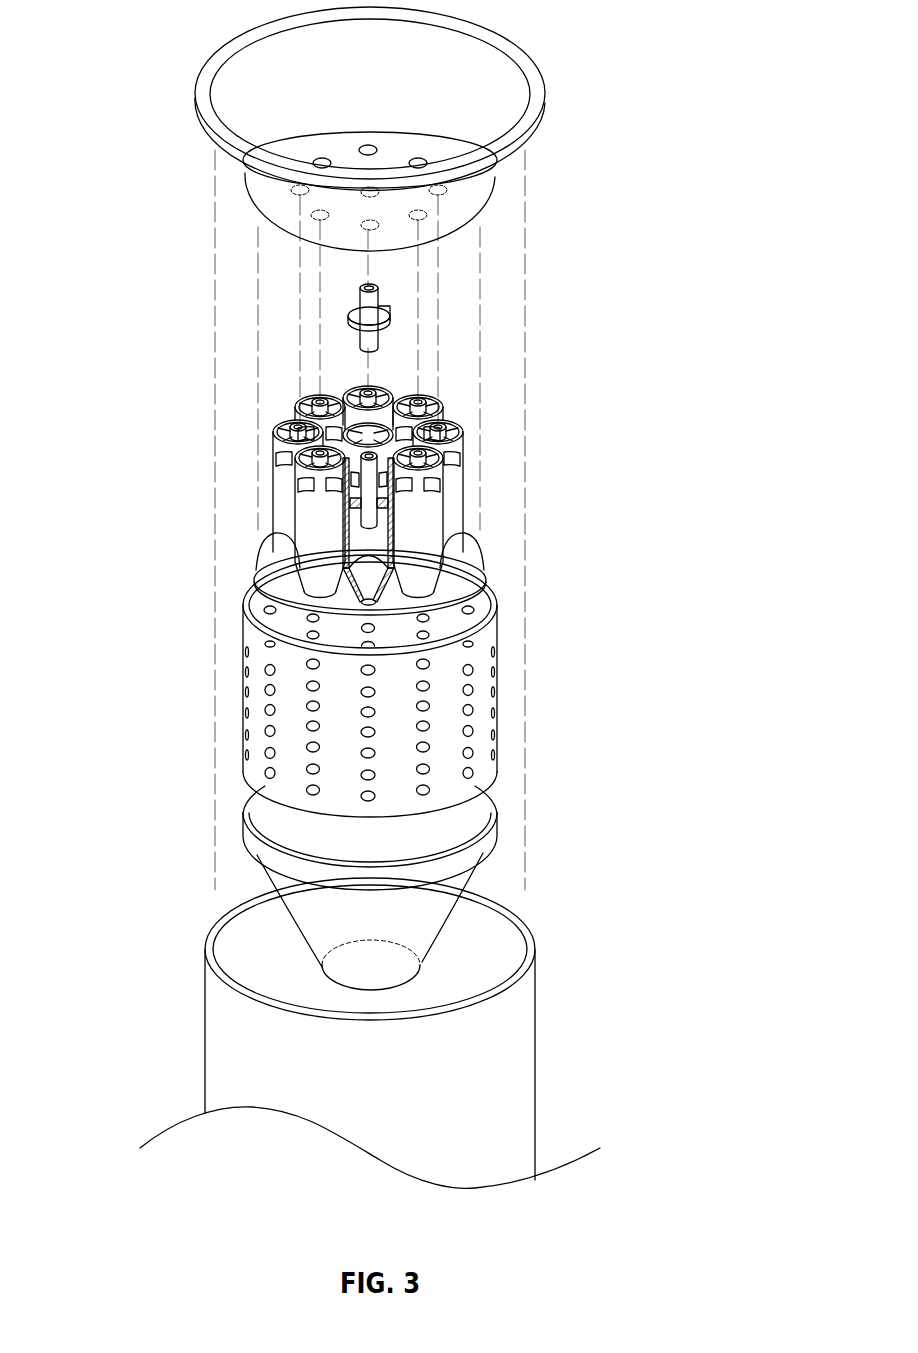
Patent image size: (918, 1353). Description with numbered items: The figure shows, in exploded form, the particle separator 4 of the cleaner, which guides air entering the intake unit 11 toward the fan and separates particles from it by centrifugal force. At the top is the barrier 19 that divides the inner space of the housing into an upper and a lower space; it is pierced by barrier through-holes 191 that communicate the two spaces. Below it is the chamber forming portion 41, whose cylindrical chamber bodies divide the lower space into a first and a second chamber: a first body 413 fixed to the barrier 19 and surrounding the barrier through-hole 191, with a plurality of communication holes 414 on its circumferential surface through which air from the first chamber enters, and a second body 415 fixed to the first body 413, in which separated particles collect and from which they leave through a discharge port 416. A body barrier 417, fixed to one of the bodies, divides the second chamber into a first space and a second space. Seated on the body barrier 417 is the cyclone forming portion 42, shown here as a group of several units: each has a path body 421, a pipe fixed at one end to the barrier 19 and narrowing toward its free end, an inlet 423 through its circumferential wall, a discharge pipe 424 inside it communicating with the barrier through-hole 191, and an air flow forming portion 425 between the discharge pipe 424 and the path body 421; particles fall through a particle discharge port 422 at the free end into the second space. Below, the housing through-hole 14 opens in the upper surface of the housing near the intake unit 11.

The particle separator 4 is at (532, 667).
The intake unit 11 is at (495, 1058).
The housing through-hole 14 is at (475, 928).
The barrier 19 is at (208, 90).
The barrier through-hole 191 is at (362, 150).
The chamber forming portion 41 is at (108, 608).
The first body 413 is at (256, 652).
The communication holes 414 is at (266, 689).
The second body 415 is at (256, 842).
The discharge port 416 is at (342, 943).
The body barrier 417 is at (248, 600).
The cyclone forming portion 42 is at (407, 444).
The path body 421 is at (458, 476).
The particle discharge port 422 is at (258, 575).
The inlet 423 is at (461, 452).
The discharge pipe 424 is at (380, 298).
The air flow forming portion 425 is at (392, 322).